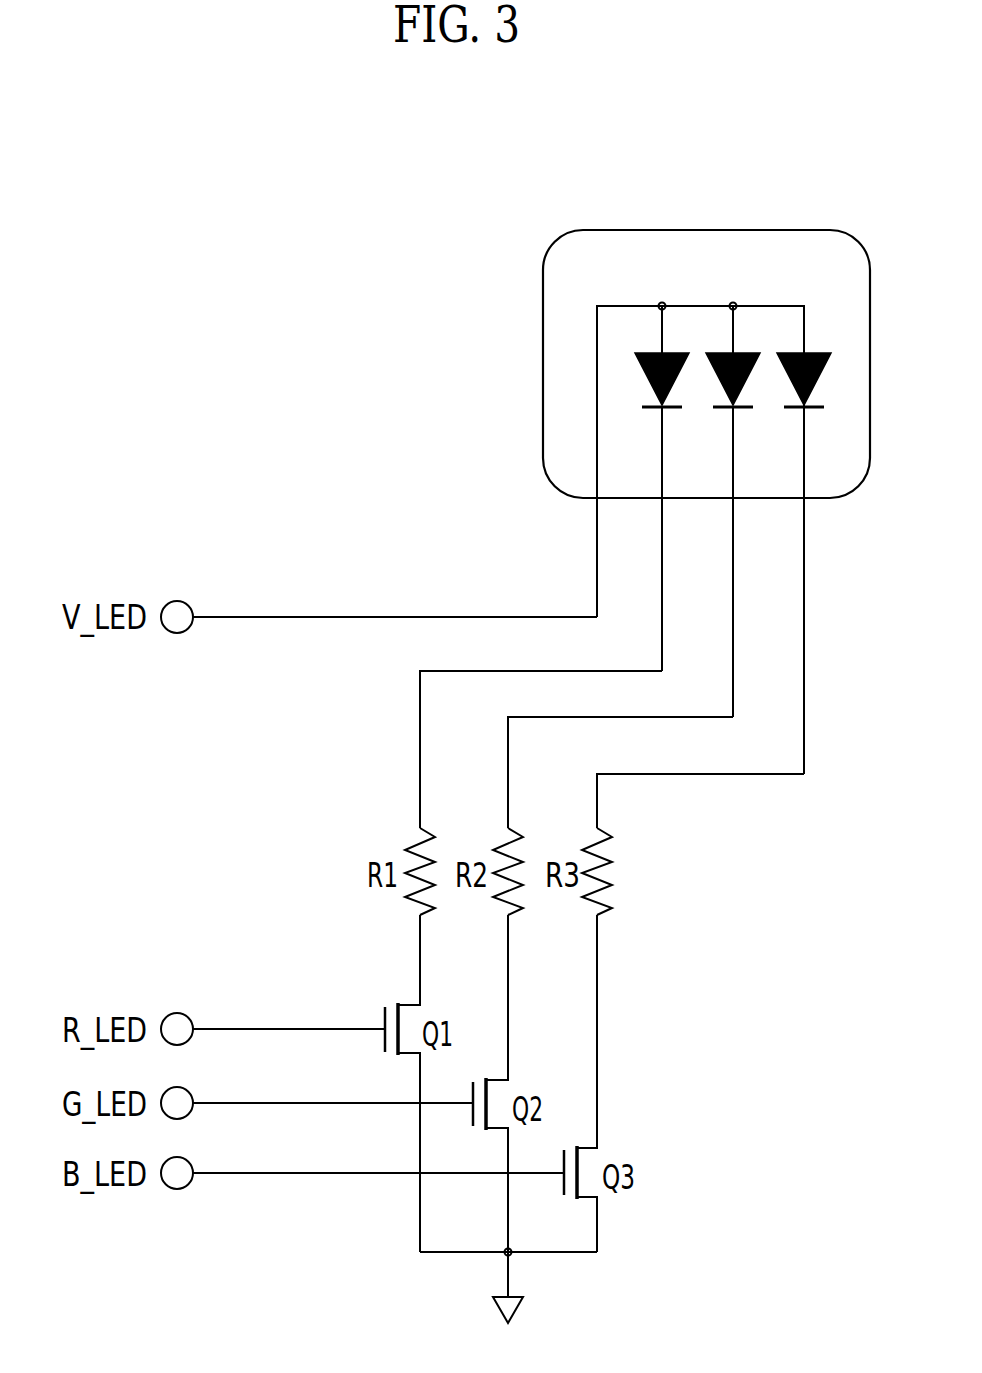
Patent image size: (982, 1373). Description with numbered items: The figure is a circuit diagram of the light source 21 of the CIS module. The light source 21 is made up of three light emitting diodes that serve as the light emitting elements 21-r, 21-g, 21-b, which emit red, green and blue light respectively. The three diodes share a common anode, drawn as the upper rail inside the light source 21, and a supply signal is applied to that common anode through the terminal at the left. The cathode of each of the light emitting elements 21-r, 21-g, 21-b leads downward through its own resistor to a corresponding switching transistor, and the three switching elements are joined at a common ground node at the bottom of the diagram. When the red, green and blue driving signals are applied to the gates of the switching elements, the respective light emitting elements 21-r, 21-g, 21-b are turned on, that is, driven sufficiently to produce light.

The light source 21 is at (547, 262).
The light emitting element 21-r is at (637, 353).
The light emitting element 21-g is at (720, 353).
The light emitting element 21-b is at (783, 353).